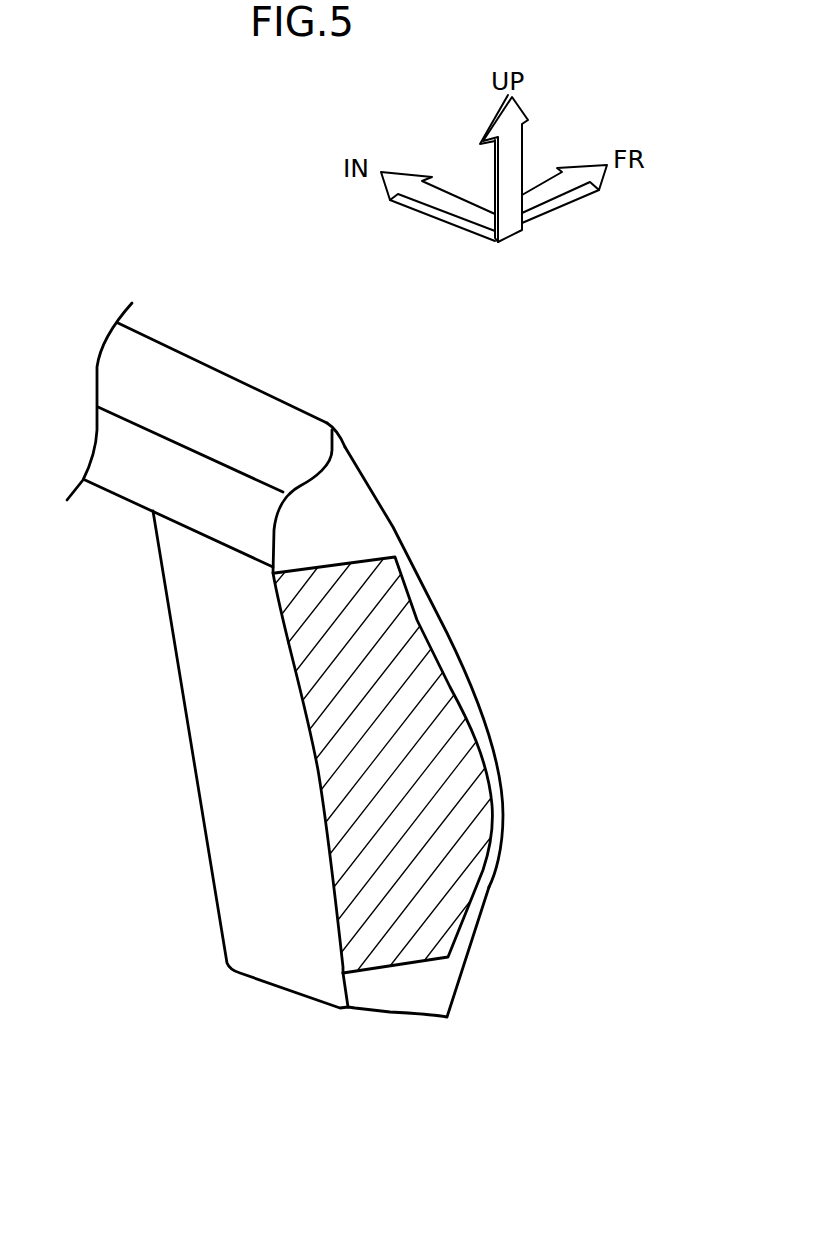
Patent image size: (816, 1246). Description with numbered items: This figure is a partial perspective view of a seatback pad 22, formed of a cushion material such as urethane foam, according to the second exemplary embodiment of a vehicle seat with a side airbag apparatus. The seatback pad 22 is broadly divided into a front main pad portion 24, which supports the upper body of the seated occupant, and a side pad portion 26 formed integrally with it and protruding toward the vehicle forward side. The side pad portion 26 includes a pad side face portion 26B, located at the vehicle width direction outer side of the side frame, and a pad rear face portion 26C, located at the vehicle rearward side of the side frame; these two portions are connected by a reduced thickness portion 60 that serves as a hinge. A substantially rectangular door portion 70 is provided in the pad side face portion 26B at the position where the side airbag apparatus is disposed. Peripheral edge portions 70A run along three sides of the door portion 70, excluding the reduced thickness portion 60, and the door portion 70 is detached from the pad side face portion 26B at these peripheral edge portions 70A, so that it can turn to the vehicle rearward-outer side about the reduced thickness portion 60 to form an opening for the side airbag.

The seatback pad 22 is at (319, 362).
The front main pad portion 24 is at (167, 353).
The side pad portion 26 is at (434, 583).
The pad side face portion 26B is at (435, 973).
The pad rear face portion 26C is at (285, 957).
The reduced thickness portion 60 is at (330, 867).
The door portion 70 is at (442, 750).
The peripheral edge portions 70A is at (338, 560).